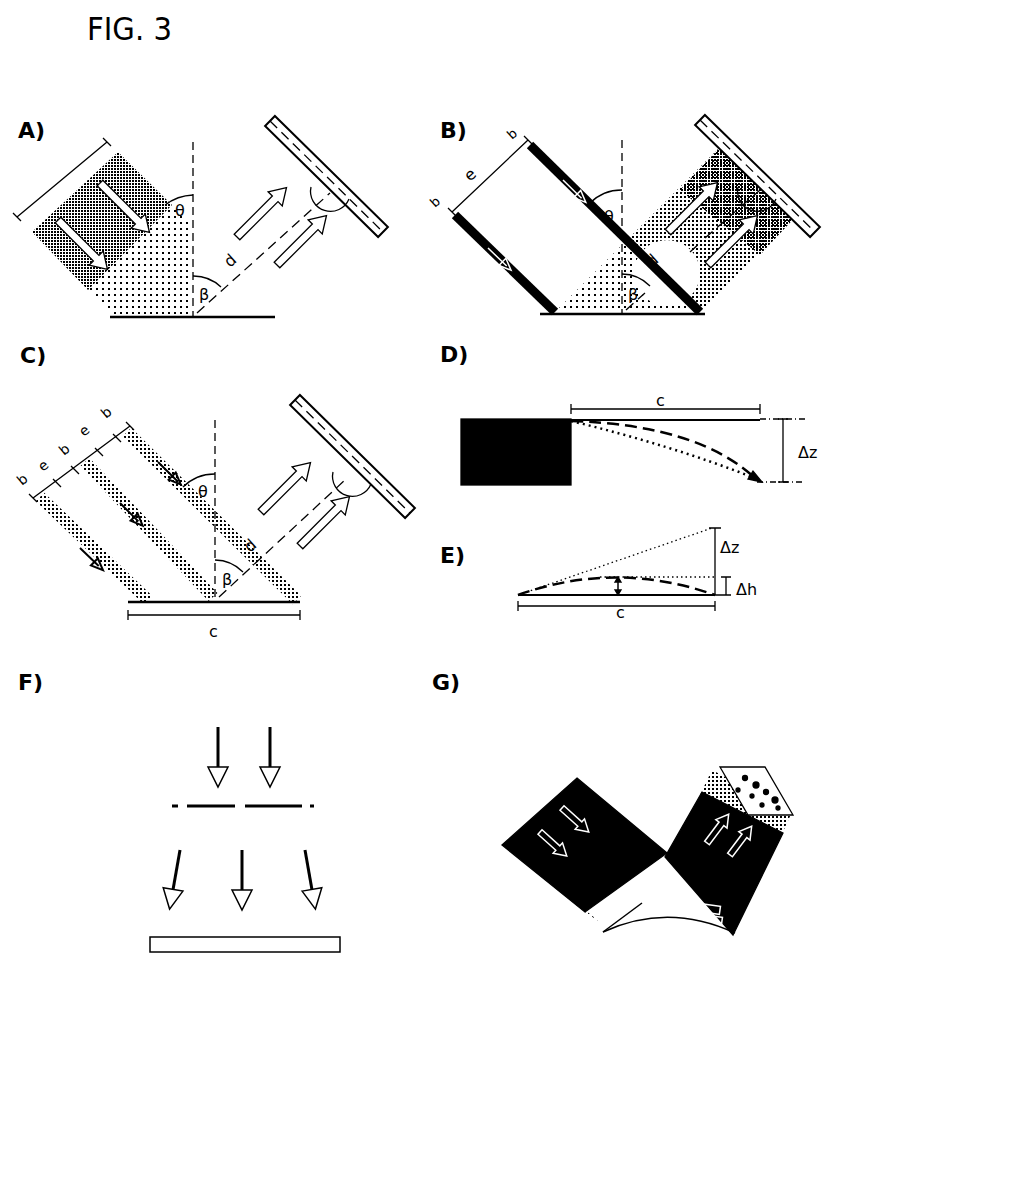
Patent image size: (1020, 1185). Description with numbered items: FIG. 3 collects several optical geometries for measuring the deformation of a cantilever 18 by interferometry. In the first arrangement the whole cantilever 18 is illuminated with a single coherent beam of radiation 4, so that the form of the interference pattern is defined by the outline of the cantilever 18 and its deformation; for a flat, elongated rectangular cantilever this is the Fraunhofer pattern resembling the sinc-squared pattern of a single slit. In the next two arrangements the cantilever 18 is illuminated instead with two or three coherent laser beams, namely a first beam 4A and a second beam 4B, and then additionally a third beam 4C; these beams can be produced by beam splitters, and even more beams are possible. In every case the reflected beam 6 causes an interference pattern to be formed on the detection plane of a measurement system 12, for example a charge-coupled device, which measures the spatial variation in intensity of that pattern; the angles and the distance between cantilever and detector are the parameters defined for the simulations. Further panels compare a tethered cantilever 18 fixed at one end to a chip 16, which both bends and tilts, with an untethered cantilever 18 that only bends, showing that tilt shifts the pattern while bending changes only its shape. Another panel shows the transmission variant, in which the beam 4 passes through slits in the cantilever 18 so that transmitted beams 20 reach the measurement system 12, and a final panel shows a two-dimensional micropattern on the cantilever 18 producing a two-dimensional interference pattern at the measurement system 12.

The coherent beam of radiation 4 is at (134, 182).
The first coherent laser beam 4A is at (555, 169).
The second coherent laser beam 4B is at (476, 237).
The third coherent laser beam 4C is at (57, 526).
The reflected beam 6 is at (320, 250).
The measurement system 12 is at (333, 172).
The chip 16 is at (514, 430).
The cantilever 18 is at (290, 317).
The transmitted beams 20 is at (318, 867).